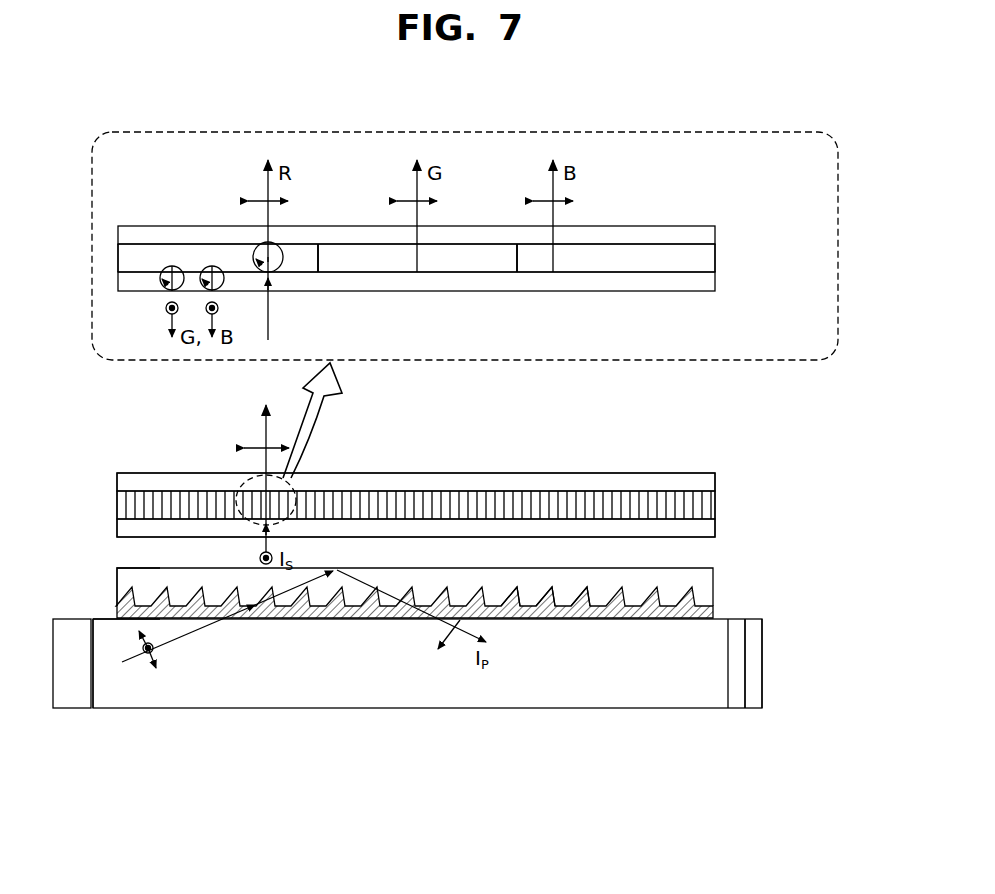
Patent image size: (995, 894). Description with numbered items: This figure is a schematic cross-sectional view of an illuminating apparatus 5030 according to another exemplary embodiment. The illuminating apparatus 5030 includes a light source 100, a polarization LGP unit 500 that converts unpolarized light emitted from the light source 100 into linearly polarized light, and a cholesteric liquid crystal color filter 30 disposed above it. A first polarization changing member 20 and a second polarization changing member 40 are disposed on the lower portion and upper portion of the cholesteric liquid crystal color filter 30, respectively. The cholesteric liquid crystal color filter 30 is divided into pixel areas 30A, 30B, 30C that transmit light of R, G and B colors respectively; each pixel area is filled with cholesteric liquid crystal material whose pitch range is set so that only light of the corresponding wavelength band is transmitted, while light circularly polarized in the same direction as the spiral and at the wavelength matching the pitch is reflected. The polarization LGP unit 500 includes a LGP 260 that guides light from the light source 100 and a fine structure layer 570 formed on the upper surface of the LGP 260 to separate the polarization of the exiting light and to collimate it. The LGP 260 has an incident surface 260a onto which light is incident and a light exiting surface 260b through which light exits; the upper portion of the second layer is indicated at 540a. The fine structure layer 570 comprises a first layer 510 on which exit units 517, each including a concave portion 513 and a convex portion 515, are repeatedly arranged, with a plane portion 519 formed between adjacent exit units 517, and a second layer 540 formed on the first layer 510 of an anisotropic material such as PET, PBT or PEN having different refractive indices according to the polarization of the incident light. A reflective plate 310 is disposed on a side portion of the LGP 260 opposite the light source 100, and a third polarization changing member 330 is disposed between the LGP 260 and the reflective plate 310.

The first polarization changing member 20 is at (715, 286).
The cholesteric liquid crystal color filter 30 is at (718, 257).
The pixel area 30A is at (156, 268).
The pixel area 30B is at (387, 268).
The pixel area 30C is at (653, 268).
The second polarization changing member 40 is at (715, 236).
The illuminating apparatus 5030 is at (720, 441).
The light source 100 is at (72, 692).
The LGP 260 is at (715, 681).
The incident surface 260a is at (96, 662).
The light exiting surface 260b is at (110, 618).
The reflective plate 310 is at (753, 629).
The third polarization changing member 330 is at (738, 652).
The polarization LGP unit 500 is at (487, 630).
The first layer 510 is at (442, 674).
The concave portion 513 is at (560, 604).
The convex portion 515 is at (535, 604).
The exit unit 517 is at (607, 676).
The plane portion 519 is at (512, 604).
The second layer 540 is at (702, 584).
The top surface of polarizing plate 540a is at (117, 571).
The fine structure layer 570 is at (469, 660).